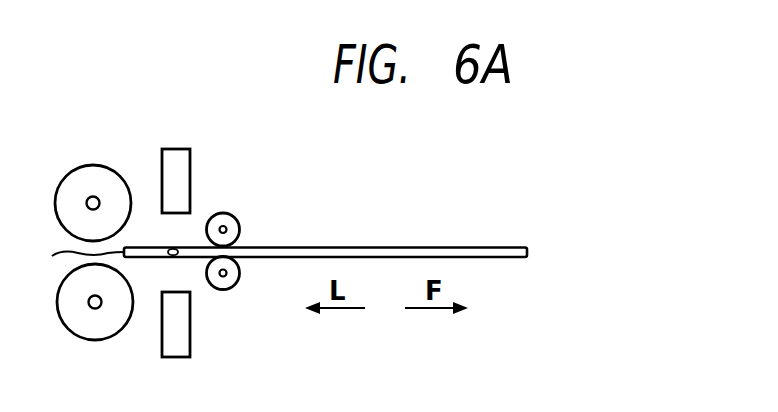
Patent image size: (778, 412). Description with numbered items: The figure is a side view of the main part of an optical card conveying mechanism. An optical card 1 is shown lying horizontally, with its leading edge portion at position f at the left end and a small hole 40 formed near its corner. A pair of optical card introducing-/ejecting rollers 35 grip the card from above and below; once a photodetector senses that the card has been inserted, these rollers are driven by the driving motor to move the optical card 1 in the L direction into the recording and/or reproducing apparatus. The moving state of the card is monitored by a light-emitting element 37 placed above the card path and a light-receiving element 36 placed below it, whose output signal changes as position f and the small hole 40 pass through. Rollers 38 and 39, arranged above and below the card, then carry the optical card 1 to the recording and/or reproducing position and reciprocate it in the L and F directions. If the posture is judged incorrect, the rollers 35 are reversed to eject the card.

The optical card 1 is at (487, 251).
The position f is at (78, 258).
The optical card introducing-/ejecting rollers 35 is at (232, 222).
The light-receiving element 36 is at (176, 345).
The light-emitting element 37 is at (174, 157).
The roller 38 is at (93, 180).
The roller 39 is at (99, 326).
The small hole 40 is at (177, 247).